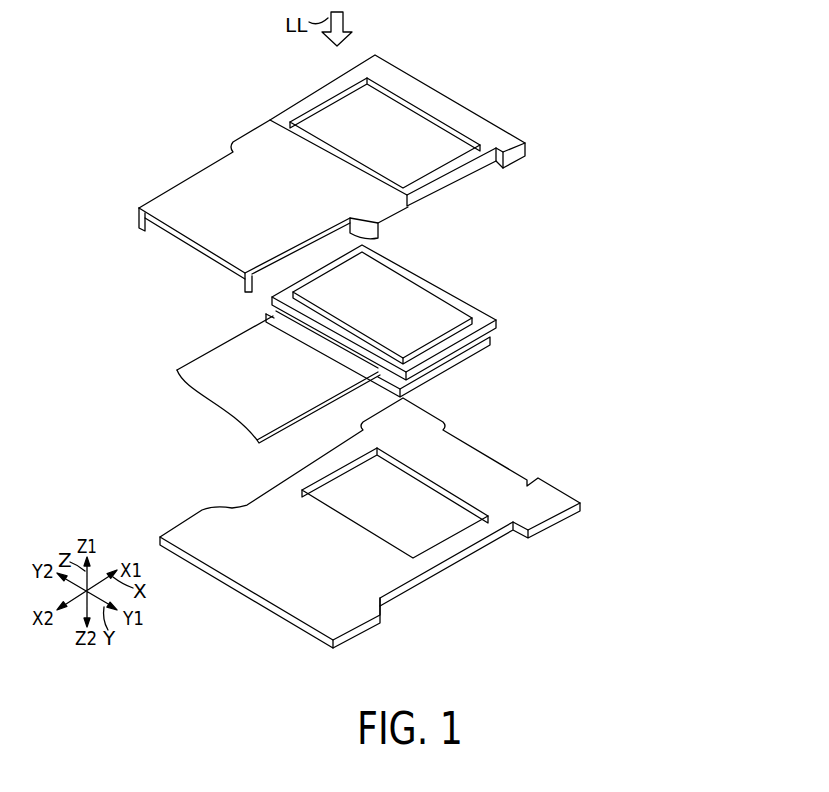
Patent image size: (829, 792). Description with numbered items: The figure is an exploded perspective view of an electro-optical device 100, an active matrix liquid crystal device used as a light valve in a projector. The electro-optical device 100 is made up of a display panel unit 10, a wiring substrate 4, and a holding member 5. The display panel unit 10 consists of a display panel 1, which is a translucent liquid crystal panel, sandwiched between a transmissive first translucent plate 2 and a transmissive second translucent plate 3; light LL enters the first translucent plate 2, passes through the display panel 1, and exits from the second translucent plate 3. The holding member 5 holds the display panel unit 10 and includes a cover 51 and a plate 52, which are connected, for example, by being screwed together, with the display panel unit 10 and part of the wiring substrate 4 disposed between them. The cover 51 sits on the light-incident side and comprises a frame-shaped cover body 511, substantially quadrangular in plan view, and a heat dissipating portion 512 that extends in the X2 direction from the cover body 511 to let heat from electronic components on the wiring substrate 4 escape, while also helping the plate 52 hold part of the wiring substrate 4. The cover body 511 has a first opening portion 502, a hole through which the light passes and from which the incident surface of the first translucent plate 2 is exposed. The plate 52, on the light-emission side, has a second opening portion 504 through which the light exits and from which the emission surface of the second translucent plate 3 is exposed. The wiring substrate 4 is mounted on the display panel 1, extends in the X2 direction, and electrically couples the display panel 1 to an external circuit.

The electro-optical device 100 is at (513, 66).
The holding member 5 is at (82, 248).
The cover 51 is at (162, 237).
The cover body 511 is at (283, 118).
The heat dissipating portion 512 is at (227, 177).
The first opening portion 502 is at (330, 100).
The plate 52 is at (173, 522).
The second opening portion 504 is at (463, 502).
The display panel unit 10 is at (532, 294).
The display panel 1 is at (497, 327).
The first translucent plate 2 is at (447, 313).
The second translucent plate 3 is at (475, 352).
The wiring substrate 4 is at (210, 348).